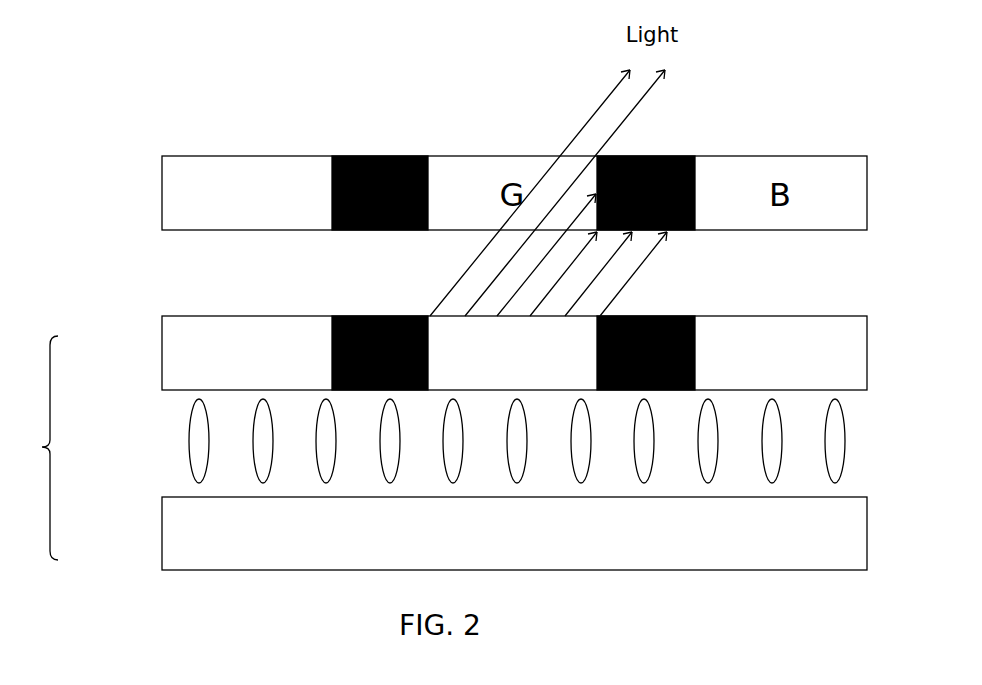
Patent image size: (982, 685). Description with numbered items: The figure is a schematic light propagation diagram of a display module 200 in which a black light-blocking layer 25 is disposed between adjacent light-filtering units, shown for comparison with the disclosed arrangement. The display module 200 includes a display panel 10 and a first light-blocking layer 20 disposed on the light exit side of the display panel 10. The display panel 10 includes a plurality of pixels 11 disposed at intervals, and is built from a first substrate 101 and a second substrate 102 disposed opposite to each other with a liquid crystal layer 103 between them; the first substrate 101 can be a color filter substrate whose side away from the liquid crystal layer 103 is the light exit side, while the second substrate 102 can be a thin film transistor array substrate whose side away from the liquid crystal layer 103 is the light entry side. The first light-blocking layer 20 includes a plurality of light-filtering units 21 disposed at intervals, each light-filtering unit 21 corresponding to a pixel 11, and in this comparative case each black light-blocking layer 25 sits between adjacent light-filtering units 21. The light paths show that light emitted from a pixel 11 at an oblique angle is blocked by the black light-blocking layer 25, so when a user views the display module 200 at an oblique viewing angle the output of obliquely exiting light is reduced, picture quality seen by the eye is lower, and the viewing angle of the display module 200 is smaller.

The display module 200 is at (206, 31).
The first light-blocking layer 20 is at (156, 192).
The light-filtering unit 21 is at (285, 178).
The black light-blocking layer 25 is at (383, 150).
The display panel 10 is at (33, 448).
The first substrate 101 is at (185, 356).
The pixel 11 is at (284, 340).
The liquid crystal layer 103 is at (197, 445).
The second substrate 102 is at (185, 538).